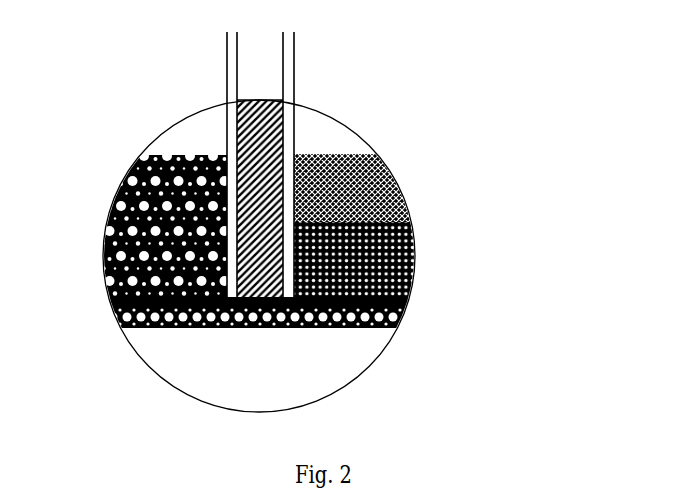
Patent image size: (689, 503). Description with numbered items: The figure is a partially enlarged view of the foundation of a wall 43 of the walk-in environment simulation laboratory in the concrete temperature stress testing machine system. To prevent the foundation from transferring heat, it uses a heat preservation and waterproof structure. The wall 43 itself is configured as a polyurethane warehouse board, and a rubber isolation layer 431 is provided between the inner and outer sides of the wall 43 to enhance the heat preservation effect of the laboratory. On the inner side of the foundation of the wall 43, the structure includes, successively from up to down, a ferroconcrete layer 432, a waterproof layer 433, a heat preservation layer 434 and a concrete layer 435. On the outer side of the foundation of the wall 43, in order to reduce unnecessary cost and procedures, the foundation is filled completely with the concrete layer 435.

The wall 43 is at (228, 102).
The rubber isolation layer 431 is at (255, 149).
The ferroconcrete layer 432 is at (508, 163).
The waterproof layer 433 is at (408, 304).
The heat preservation layer 434 is at (410, 290).
The concrete layer 435 is at (124, 191).